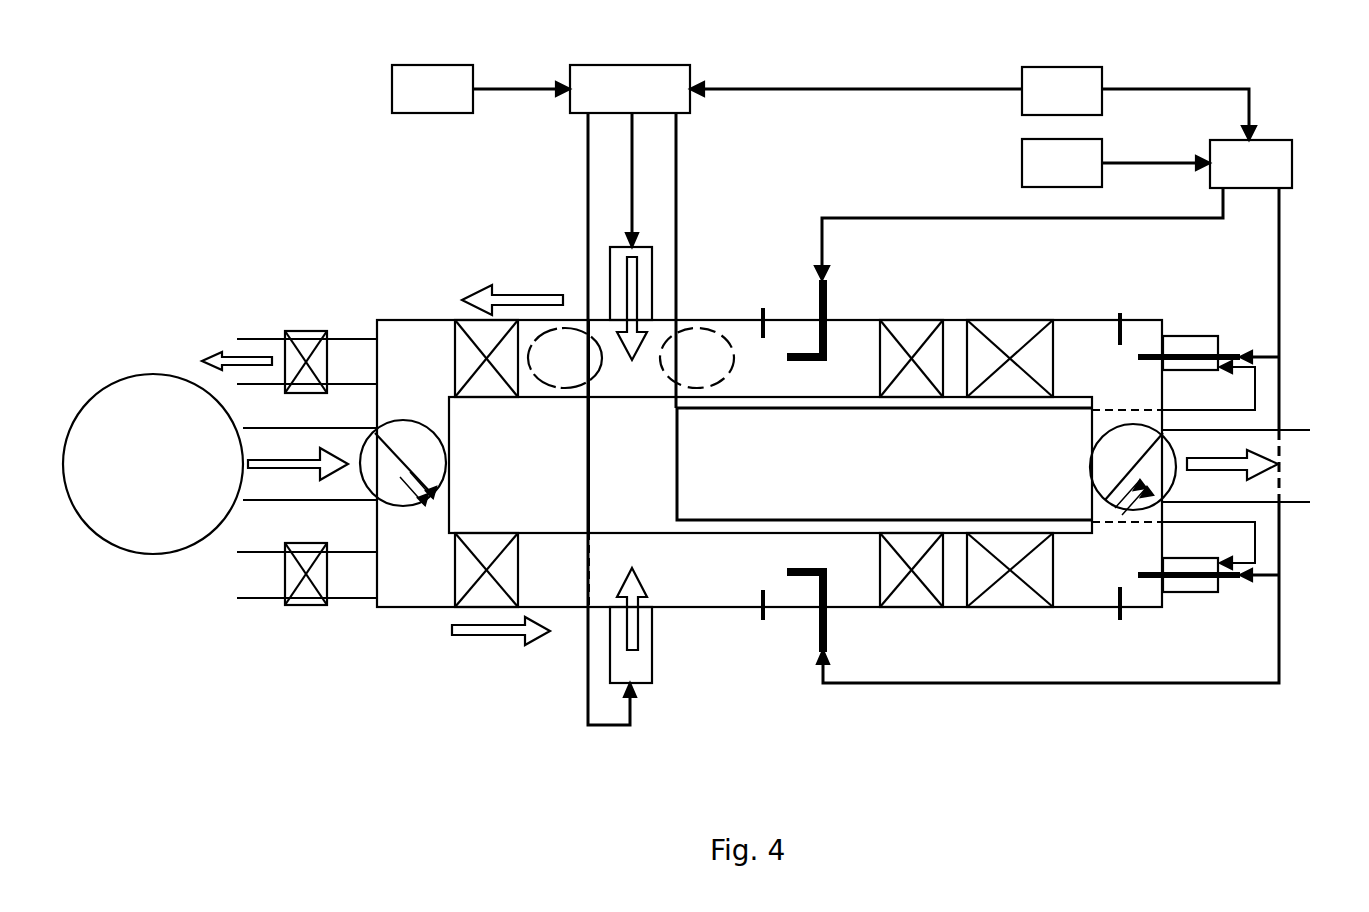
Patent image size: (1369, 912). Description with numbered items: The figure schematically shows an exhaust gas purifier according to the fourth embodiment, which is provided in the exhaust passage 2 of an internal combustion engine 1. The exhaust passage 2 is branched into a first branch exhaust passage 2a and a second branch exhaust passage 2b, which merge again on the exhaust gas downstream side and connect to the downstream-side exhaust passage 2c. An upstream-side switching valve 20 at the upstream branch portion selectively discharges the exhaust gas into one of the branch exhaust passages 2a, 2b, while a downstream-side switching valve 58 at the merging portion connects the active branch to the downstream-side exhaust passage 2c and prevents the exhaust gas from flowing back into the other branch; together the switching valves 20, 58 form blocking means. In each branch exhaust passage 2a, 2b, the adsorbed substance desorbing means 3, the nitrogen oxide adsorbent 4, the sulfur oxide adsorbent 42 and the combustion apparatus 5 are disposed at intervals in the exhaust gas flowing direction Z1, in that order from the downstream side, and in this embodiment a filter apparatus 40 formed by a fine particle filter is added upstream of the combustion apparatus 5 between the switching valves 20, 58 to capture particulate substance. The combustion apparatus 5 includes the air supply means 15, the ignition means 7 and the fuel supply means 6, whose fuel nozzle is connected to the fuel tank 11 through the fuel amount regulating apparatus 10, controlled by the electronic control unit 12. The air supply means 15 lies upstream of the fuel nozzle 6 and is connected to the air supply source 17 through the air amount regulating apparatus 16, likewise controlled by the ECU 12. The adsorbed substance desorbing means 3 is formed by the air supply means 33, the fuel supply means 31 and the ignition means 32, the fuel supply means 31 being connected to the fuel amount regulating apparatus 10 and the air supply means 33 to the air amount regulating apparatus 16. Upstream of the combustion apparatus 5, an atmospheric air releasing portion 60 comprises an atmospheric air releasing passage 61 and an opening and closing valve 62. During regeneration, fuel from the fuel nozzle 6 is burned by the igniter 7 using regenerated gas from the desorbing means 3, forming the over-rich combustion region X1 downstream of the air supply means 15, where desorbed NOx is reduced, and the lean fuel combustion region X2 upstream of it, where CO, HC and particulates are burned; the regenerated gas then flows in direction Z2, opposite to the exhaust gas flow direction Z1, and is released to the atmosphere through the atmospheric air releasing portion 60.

The internal combustion engine 1 is at (105, 393).
The exhaust passage 2 is at (412, 625).
The first branch exhaust passage 2a is at (408, 320).
The second branch exhaust passage 2b is at (392, 612).
The downstream-side exhaust passage 2c is at (1290, 430).
The adsorbed substance desorbing means 3 is at (1292, 326).
The nitrogen oxide adsorbent 4 is at (1008, 320).
The combustion apparatus 5 is at (688, 210).
The fuel supply means 6 is at (828, 305).
The ignition means 7 is at (766, 310).
The fuel amount regulating apparatus 10 is at (1292, 155).
The fuel tank 11 is at (1022, 162).
The electronic control unit 12 is at (1050, 67).
The air supply means 15 is at (610, 268).
The air amount regulating apparatus 16 is at (620, 65).
The air supply source 17 is at (392, 88).
The upstream-side switching valve 20 is at (440, 437).
The fuel supply means 31 is at (1172, 345).
The ignition means 32 is at (1126, 320).
The air supply means 33 is at (1210, 340).
The filter apparatus 40 is at (455, 325).
The sulfur oxide adsorbent 42 is at (915, 320).
The downstream-side switching valve 58 is at (1098, 440).
The atmospheric air releasing portion 60 is at (324, 300).
The atmospheric air releasing passage 61 is at (256, 332).
The opening and closing valve 62 is at (303, 332).
The over-rich combustion region X1 is at (706, 328).
The lean fuel combustion region X2 is at (552, 388).
The exhaust gas flowing direction Z1 is at (280, 472).
The regenerated gas flow Z2 is at (516, 292).